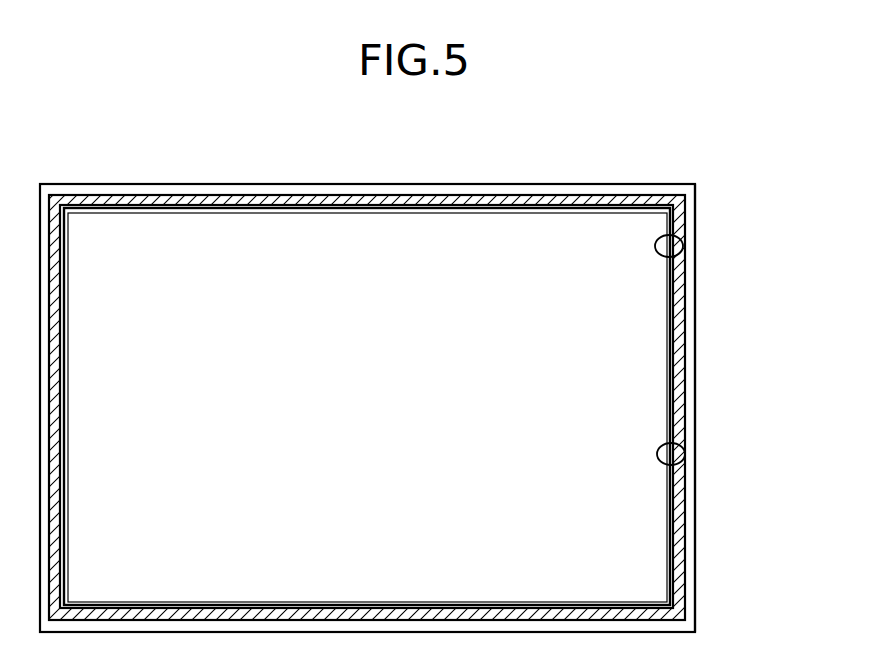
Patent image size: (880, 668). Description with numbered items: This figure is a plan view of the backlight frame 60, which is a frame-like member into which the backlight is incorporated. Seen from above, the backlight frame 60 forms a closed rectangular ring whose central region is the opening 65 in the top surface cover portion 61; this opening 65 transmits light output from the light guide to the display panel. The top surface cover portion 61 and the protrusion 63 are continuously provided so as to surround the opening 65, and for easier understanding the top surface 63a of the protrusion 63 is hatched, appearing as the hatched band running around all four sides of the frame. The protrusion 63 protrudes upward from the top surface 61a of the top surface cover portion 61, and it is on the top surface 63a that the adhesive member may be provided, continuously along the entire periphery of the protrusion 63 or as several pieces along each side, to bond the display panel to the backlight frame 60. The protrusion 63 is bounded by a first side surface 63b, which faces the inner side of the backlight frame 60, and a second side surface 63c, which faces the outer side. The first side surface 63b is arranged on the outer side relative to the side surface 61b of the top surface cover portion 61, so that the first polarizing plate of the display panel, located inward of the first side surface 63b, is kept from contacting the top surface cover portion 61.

The backlight frame 60 is at (549, 184).
The top surface cover portion 61 is at (690, 285).
The top surface of the top surface cover portion 61a is at (689, 327).
The side surface of the top surface cover portion 61b is at (682, 242).
The protrusion 63 is at (683, 412).
The top surface of the protrusion 63a is at (688, 370).
The first side surface 63b is at (684, 452).
The second side surface 63c is at (683, 495).
The opening 65 is at (354, 232).